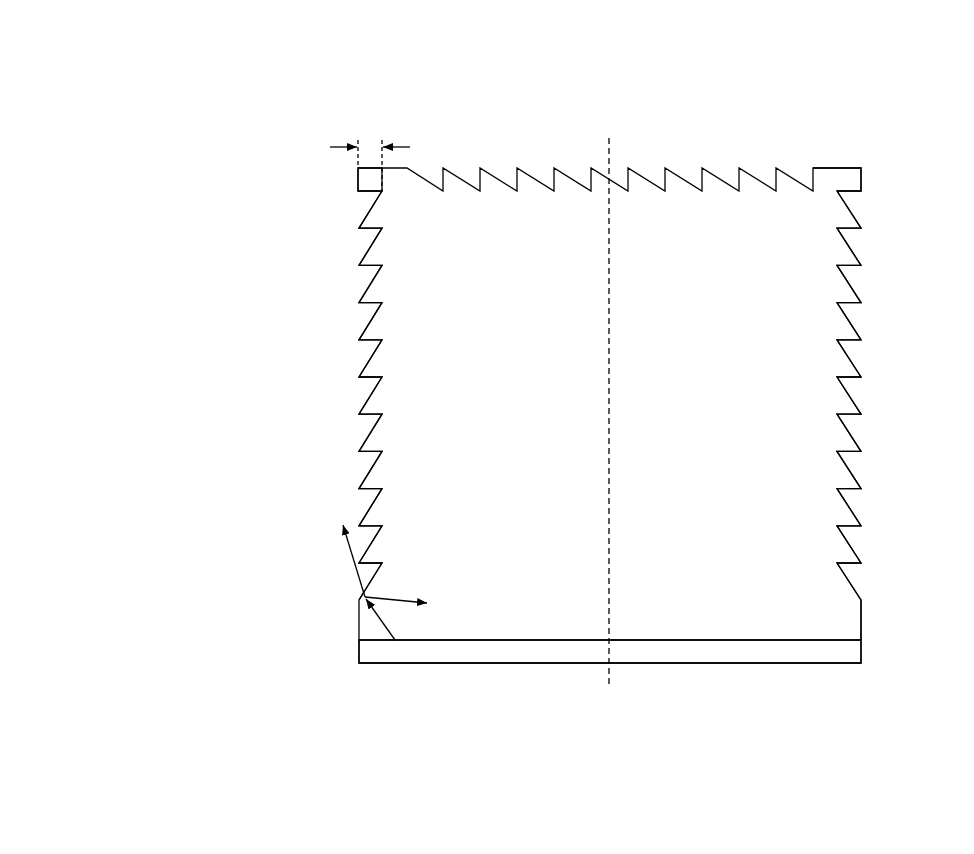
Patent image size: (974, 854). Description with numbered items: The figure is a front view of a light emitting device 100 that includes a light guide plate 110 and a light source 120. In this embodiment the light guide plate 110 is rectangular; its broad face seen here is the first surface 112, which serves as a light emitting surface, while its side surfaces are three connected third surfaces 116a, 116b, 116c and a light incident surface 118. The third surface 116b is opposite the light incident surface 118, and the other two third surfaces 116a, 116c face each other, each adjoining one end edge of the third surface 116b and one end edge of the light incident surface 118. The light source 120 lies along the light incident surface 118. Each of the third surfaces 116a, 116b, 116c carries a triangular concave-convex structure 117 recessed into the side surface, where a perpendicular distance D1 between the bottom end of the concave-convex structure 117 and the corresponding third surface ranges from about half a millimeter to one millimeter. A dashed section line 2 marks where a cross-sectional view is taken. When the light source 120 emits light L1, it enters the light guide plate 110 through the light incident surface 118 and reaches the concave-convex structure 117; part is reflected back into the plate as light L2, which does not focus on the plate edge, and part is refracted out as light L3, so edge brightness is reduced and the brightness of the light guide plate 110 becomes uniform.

The light emitting device 100 is at (215, 111).
The light guide plate 110 is at (430, 345).
The first surface 112 is at (812, 376).
The third surface 116a is at (355, 180).
The third surface 116b is at (851, 165).
The third surface 116c is at (866, 617).
The concave-convex structure 117 is at (372, 283).
The light incident surface 118 is at (815, 645).
The light source 120 is at (425, 650).
The perpendicular distance D1 is at (370, 152).
The line 2- 2 is at (608, 138).
The light L1 is at (358, 627).
The light L2 is at (396, 592).
The light L3 is at (352, 550).